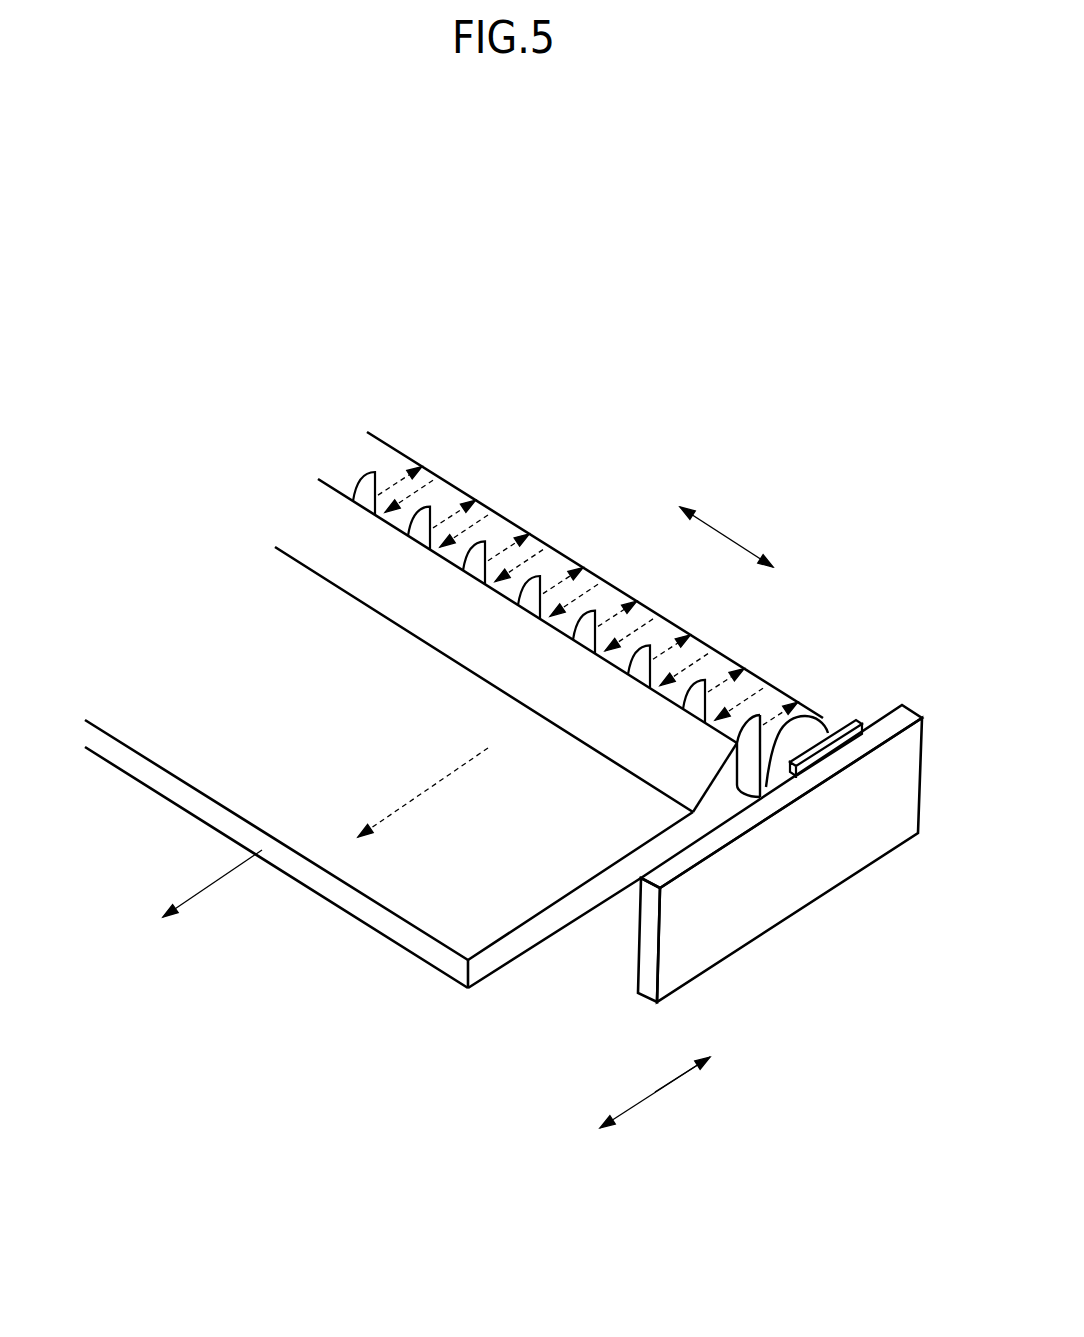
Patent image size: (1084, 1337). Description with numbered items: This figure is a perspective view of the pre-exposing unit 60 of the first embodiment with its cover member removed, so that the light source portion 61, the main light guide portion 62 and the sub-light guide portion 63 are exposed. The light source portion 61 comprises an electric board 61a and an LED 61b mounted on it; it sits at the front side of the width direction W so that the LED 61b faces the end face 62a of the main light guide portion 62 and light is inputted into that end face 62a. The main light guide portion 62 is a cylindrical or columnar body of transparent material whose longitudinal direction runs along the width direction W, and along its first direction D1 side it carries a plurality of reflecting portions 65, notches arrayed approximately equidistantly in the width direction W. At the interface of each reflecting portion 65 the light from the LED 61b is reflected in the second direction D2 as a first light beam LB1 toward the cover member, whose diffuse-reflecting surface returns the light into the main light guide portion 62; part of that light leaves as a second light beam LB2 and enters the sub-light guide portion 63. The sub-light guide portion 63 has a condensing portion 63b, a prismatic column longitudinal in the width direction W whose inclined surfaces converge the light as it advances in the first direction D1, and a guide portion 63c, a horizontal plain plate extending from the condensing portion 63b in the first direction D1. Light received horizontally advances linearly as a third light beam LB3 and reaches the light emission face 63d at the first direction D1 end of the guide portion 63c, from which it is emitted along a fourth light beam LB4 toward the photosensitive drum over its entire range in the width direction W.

The pre-exposing unit 60 is at (827, 607).
The light source portion 61 is at (783, 948).
The electric board 61a is at (873, 842).
The LED 61b is at (855, 718).
The main light guide portion 62 is at (558, 567).
The end face 62a is at (807, 729).
The sub-light guide portion 63 is at (365, 957).
The condensing portion 63b is at (725, 795).
The guide portion 63c is at (483, 923).
The light emission face 63d is at (137, 767).
The reflecting portions 65 is at (641, 672).
The first light beam LB1 is at (395, 487).
The second light beam LB2 is at (437, 492).
The third light beam LB3 is at (442, 780).
The fourth light beam LB4 is at (208, 888).
The width direction W is at (726, 535).
The first direction D1 is at (638, 1110).
The second direction D2 is at (703, 1062).